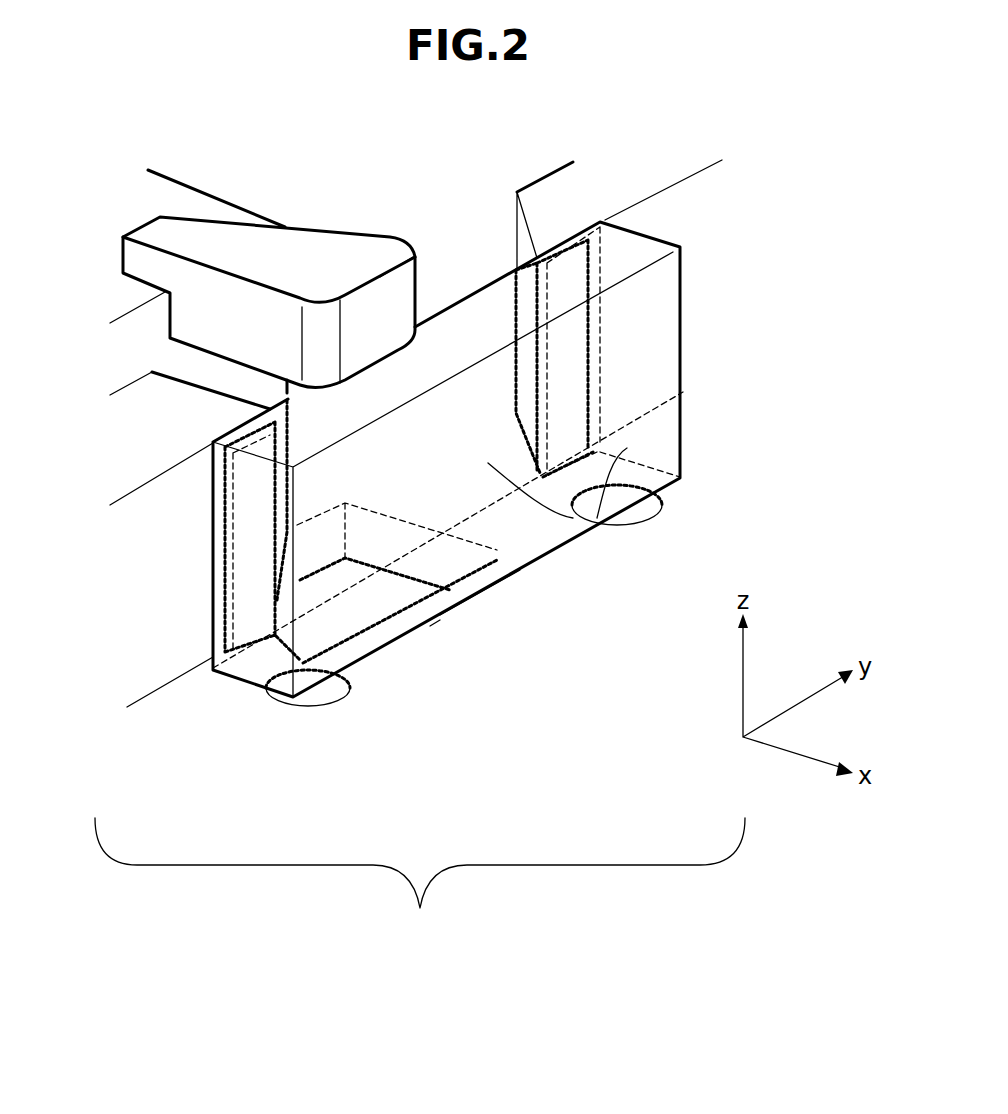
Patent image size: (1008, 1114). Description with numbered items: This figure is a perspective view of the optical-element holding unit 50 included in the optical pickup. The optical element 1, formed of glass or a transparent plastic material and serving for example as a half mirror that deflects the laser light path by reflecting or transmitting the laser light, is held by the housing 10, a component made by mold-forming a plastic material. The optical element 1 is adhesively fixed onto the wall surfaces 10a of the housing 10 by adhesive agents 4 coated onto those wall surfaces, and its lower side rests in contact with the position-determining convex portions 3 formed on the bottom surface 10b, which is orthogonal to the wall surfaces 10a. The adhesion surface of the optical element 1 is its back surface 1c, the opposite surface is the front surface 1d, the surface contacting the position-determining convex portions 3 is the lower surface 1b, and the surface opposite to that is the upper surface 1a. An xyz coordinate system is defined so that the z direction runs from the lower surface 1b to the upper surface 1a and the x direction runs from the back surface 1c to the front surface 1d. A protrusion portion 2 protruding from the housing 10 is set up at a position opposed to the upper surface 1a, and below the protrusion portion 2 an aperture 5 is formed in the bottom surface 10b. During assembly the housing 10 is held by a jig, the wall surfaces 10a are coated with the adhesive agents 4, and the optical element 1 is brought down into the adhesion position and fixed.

The optical element 1 is at (702, 400).
The upper surface 1a is at (500, 303).
The lower surface 1b is at (517, 543).
The back surface 1c is at (448, 303).
The front surface 1d is at (627, 448).
The protrusion portion 2 is at (332, 273).
The position-determining convex portions 3 is at (660, 512).
The adhesive agents 4 is at (567, 318).
The aperture 5 is at (377, 608).
The housing 10 is at (140, 194).
The wall surfaces 10a is at (703, 277).
The bottom surface 10b is at (622, 597).
The optical-element holding unit 50 is at (420, 890).